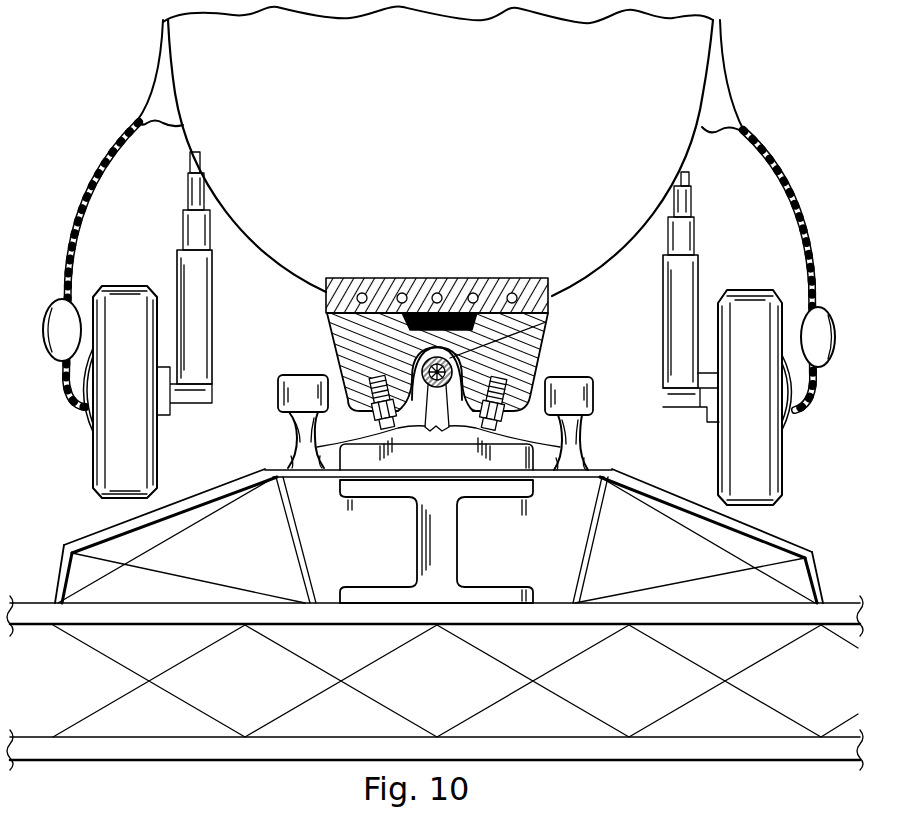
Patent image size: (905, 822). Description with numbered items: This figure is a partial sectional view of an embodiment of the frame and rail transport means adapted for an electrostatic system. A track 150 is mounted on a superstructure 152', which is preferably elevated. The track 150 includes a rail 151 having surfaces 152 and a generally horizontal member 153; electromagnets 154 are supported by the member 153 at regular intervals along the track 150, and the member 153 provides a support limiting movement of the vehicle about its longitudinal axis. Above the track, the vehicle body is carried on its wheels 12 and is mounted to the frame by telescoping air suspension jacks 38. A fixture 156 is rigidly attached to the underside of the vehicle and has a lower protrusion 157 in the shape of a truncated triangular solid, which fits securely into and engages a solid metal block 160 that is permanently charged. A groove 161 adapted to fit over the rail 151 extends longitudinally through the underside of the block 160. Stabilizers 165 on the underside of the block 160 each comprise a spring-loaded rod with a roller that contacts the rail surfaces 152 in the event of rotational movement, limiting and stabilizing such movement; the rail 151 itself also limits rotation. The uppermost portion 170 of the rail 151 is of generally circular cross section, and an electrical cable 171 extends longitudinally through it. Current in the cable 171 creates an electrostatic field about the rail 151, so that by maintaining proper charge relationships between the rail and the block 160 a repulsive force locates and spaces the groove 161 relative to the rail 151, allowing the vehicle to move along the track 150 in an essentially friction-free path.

The wheels 12 is at (137, 420).
The telescoping air suspension jacks 38 is at (206, 329).
The track 150 is at (425, 538).
The rail 151 is at (458, 461).
The rail surfaces 152 is at (437, 441).
The superstructure 152' is at (417, 560).
The generally horizontal member 153 is at (245, 476).
The electromagnets 154 is at (296, 374).
The fixtures 156 is at (481, 278).
The lower protrusion 157 is at (552, 320).
The solid metal block 160 is at (353, 345).
The groove 161 is at (547, 335).
The stabilizers 165 is at (378, 411).
The uppermost portion of rail 170 is at (412, 360).
The electrical cable 171 is at (437, 365).